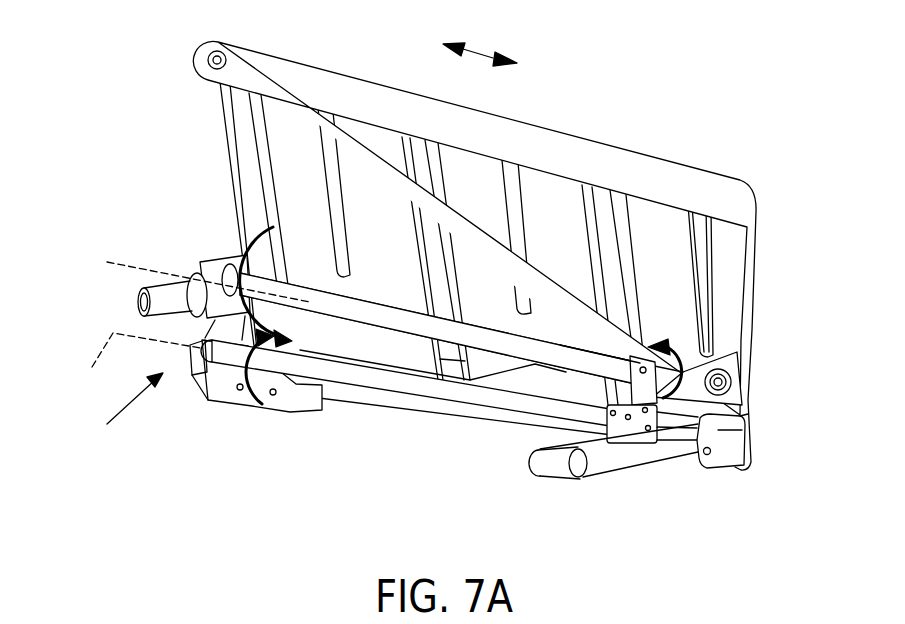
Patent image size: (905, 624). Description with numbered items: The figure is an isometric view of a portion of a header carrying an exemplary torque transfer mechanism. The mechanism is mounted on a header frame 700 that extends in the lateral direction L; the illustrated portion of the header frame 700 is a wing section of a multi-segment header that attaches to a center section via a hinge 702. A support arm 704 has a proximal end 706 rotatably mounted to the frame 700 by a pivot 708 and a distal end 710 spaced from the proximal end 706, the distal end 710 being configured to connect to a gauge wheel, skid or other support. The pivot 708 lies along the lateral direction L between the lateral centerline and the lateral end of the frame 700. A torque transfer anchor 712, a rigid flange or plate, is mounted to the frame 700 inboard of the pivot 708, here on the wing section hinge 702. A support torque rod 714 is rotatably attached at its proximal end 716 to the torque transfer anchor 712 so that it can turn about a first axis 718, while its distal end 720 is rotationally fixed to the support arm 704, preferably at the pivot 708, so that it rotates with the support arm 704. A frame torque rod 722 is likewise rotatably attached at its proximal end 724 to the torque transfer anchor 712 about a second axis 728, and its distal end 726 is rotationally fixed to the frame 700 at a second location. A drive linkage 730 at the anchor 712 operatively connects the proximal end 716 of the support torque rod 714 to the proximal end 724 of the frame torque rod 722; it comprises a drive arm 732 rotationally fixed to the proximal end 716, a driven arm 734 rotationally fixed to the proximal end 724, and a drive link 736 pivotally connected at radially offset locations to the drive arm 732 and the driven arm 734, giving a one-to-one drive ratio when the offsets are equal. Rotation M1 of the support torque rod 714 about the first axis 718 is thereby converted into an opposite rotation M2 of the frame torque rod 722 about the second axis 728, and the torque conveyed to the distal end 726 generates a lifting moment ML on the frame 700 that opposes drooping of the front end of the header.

The header frame 700 is at (291, 72).
The hinge 702 is at (137, 303).
The support arm 704 is at (628, 457).
The proximal end 706 is at (681, 453).
The pivot 708 is at (709, 456).
The distal end 710 is at (556, 467).
The torque transfer anchor 712 is at (207, 344).
The support torque rod 714 is at (387, 385).
The proximal end 716 is at (220, 384).
The first axis 718 is at (120, 396).
The distal end 720 is at (568, 426).
The frame torque rod 722 is at (370, 304).
The proximal end 724 is at (242, 284).
The distal end 726 is at (598, 357).
The second axis 728 is at (121, 263).
The drive linkage 730 is at (170, 374).
The drive arm 732 is at (195, 378).
The driven arm 734 is at (207, 273).
The drive link 736 is at (160, 333).
The rotational motion M1 is at (270, 395).
The rotational motion M2 is at (272, 226).
The lifting moment ML is at (677, 390).
The lateral direction L is at (478, 50).